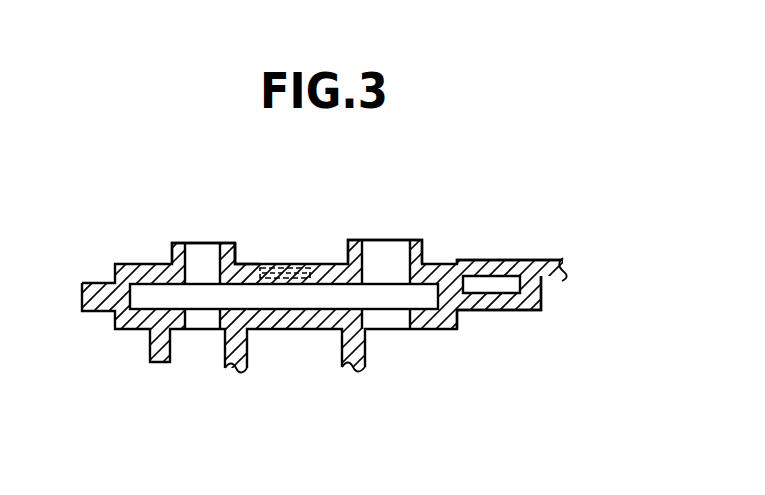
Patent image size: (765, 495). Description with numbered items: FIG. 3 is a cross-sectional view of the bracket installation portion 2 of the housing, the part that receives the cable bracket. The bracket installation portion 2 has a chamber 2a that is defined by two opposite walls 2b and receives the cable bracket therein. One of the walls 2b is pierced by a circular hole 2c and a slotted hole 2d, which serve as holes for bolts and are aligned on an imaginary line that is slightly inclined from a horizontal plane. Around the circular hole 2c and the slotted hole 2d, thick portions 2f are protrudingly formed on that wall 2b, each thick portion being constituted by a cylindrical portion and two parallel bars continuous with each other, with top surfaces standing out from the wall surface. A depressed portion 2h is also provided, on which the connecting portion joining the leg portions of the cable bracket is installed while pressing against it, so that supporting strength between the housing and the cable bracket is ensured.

The bracket installation portion 2 is at (277, 332).
The chamber 2a is at (152, 295).
The walls 2b is at (445, 262).
The circular hole 2c is at (203, 250).
The slotted hole 2d is at (383, 250).
The thick portions 2f is at (236, 252).
The depressed portion 2h is at (298, 264).